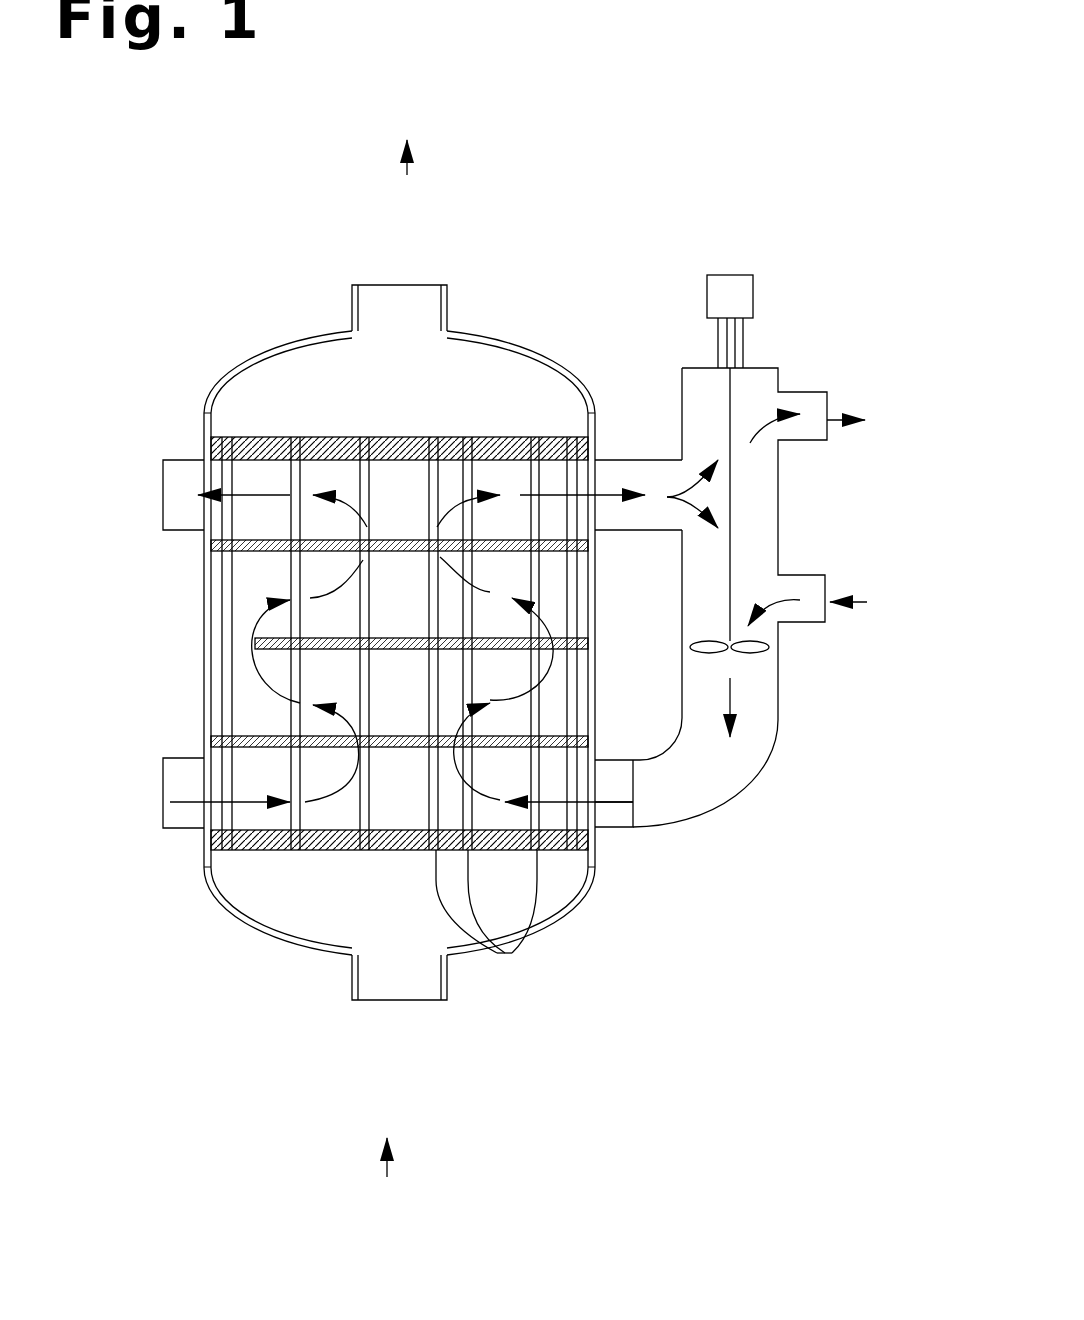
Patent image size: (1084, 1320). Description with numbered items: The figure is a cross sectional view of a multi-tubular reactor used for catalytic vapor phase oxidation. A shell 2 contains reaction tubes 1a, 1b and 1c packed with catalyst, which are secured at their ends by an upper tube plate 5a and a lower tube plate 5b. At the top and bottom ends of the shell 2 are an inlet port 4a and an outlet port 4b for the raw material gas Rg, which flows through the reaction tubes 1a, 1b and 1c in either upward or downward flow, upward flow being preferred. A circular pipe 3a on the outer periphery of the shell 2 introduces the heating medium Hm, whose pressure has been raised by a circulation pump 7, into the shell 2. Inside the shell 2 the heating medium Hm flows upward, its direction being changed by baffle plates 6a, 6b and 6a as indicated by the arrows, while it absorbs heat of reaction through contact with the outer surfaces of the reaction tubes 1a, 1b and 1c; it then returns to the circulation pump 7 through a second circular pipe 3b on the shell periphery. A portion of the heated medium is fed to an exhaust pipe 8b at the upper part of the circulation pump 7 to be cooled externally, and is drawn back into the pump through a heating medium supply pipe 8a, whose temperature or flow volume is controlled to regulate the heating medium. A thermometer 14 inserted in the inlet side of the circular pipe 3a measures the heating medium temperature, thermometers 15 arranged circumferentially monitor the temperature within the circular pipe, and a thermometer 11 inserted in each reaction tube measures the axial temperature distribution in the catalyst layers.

The reaction tube 1a is at (382, 625).
The reaction tube 1b is at (311, 625).
The reaction tube 1c is at (244, 625).
The shell 2 is at (203, 672).
The circular pipe 3a is at (392, 799).
The circular pipe 3b is at (392, 476).
The inlet port 4a is at (399, 1000).
The outlet port 4b is at (399, 289).
The upper tube plate 5a is at (503, 625).
The lower tube plate 5b is at (457, 901).
The baffle plate 6a is at (399, 627).
The baffle plate 6b is at (421, 624).
The circulation pump 7 is at (752, 660).
The heating medium supply pipe 8a is at (837, 609).
The exhaust pipe 8b is at (839, 426).
The thermometer 11 is at (512, 992).
The thermometer 14 is at (690, 780).
The thermometer 15 is at (622, 777).
The heating medium Hm is at (743, 700).
The raw material gas Rg is at (390, 1157).